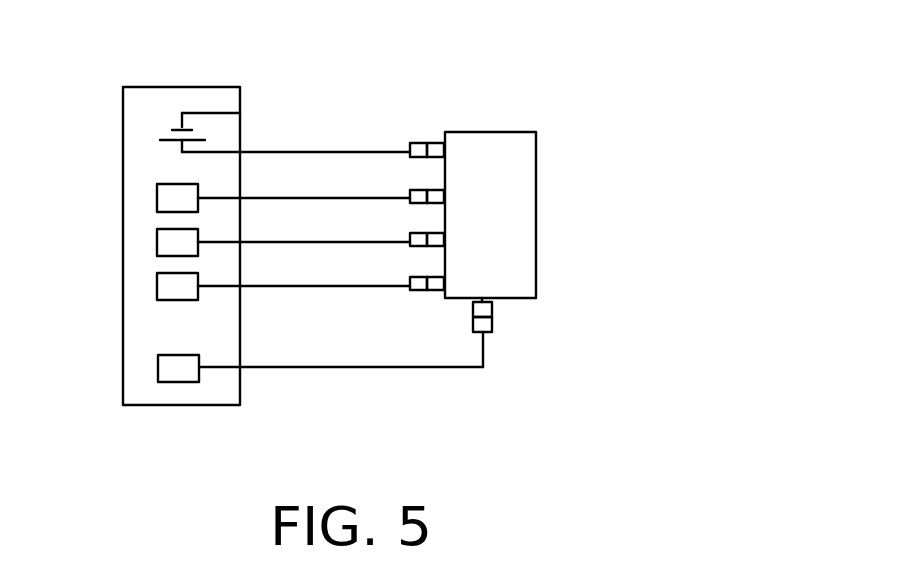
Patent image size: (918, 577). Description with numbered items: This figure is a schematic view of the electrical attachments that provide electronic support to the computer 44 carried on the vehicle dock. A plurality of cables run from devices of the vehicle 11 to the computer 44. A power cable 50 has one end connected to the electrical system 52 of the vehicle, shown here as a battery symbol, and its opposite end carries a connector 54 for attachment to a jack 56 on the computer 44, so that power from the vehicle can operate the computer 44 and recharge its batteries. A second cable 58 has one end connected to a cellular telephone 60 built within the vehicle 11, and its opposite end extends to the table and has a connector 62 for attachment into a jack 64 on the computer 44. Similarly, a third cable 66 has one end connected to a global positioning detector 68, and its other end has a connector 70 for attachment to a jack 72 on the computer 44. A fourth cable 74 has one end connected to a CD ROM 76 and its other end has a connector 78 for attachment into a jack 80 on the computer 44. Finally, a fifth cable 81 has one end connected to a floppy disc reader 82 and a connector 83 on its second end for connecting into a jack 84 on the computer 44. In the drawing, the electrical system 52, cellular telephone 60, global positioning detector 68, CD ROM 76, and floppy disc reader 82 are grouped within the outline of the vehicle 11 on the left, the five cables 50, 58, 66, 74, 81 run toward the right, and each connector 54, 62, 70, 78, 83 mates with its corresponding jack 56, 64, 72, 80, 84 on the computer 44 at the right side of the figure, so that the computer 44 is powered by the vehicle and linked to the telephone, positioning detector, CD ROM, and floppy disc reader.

The vehicle 11 is at (124, 275).
The computer 44 is at (536, 208).
The power cable 50 is at (293, 152).
The electrical system 52 is at (181, 116).
The connector 54 is at (417, 143).
The jack 56 is at (438, 143).
The second cable 58 is at (350, 196).
The cellular telephone 60 is at (157, 198).
The connector 62 is at (410, 186).
The jack 64 is at (432, 188).
The third cable 66 is at (300, 242).
The global positioning detector 68 is at (157, 243).
The connector 70 is at (410, 247).
The jack 72 is at (432, 248).
The fourth cable 74 is at (390, 285).
The CD ROM 76 is at (157, 290).
The connector 78 is at (418, 291).
The jack 80 is at (437, 291).
The fifth cable 81 is at (483, 363).
The floppy disc reader 82 is at (158, 368).
The connector 83 is at (492, 325).
The jack 84 is at (492, 310).